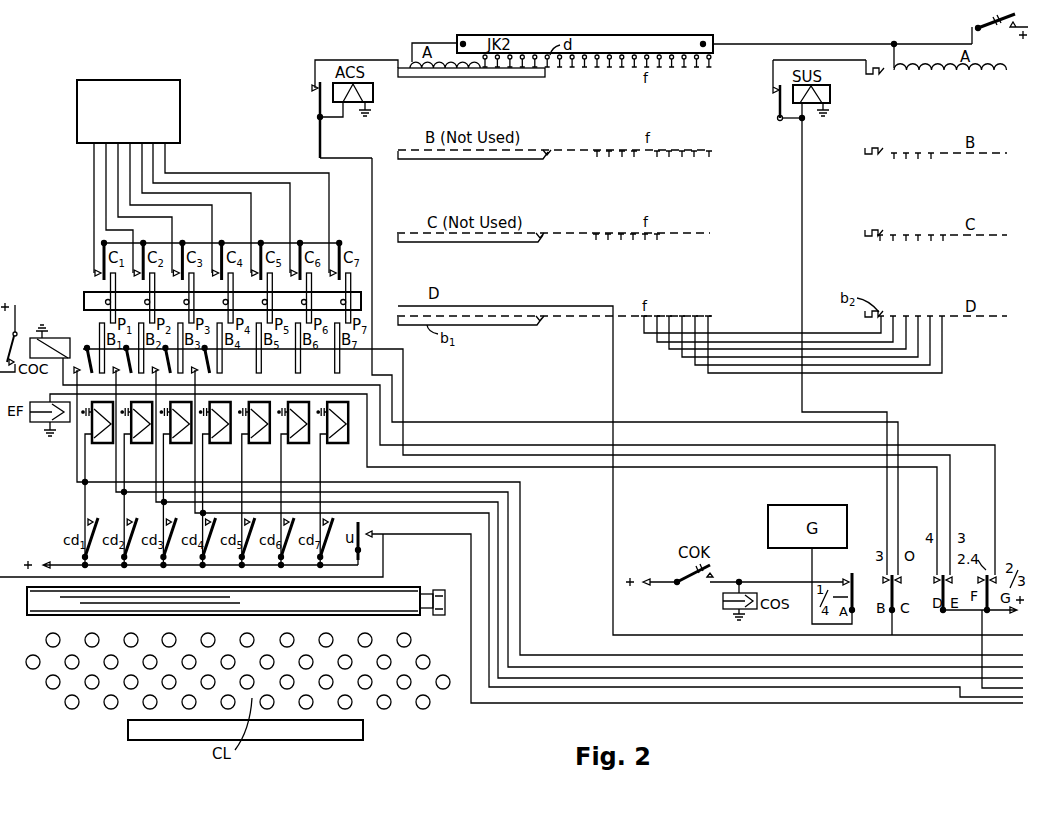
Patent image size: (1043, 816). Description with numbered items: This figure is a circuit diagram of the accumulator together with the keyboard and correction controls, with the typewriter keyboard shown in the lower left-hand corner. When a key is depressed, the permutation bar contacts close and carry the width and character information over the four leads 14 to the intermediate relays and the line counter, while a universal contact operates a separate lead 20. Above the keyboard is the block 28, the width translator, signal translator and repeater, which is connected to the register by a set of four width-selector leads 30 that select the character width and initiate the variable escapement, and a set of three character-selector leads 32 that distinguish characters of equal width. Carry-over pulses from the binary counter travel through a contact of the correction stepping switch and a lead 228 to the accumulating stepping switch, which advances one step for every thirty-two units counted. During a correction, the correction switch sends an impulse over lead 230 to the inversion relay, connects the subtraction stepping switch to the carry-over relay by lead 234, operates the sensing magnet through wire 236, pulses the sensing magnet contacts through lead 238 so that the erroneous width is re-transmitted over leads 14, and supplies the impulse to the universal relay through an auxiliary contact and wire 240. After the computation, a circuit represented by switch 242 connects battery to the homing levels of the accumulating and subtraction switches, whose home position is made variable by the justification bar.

The width translator, signal translator and repeater block 28 is at (128, 111).
The width-selector leads 30 is at (172, 158).
The character-selector leads 32 is at (229, 208).
The wire 240 is at (512, 512).
The lead 228 is at (455, 422).
The leads 14 is at (405, 478).
The lead 20 is at (528, 705).
The lead 234 is at (805, 145).
The wire 236 is at (984, 440).
The lead 238 is at (953, 502).
The switch 242 is at (988, 19).
The lead 230 is at (983, 623).